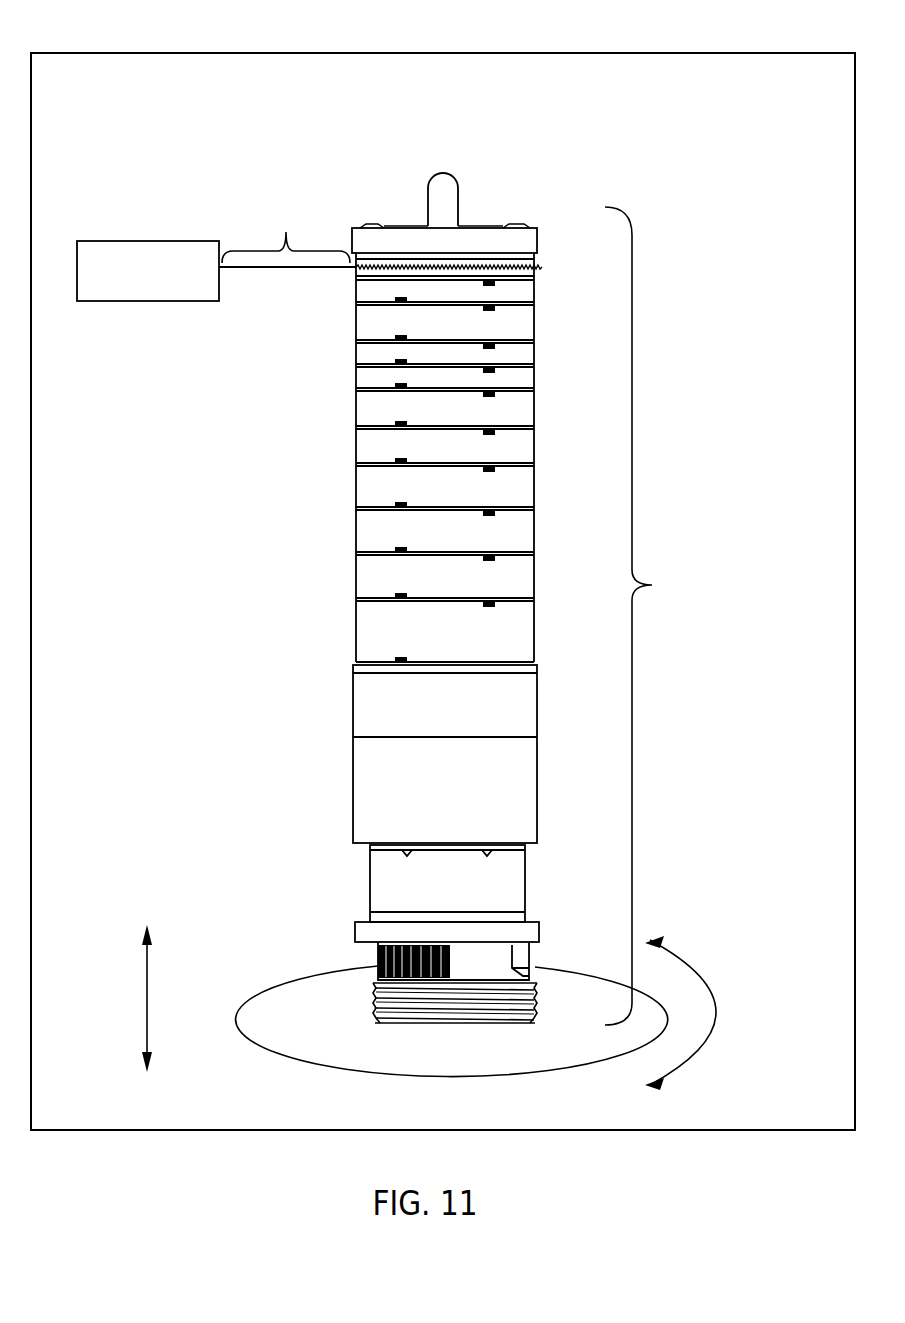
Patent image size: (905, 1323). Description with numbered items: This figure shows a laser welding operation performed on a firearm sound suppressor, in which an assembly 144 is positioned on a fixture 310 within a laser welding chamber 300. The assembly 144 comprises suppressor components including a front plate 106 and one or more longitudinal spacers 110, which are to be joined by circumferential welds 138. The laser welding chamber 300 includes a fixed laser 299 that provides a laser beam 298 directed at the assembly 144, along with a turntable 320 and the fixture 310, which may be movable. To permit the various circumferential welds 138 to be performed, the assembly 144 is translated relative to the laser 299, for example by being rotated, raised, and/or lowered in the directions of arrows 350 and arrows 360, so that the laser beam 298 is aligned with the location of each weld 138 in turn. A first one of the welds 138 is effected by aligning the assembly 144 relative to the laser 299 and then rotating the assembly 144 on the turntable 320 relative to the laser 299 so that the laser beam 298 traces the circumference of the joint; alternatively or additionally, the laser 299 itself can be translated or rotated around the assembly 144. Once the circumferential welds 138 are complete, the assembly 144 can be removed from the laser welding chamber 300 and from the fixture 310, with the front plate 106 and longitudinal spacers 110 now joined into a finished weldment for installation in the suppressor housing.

The laser welding chamber 300 is at (661, 53).
The fixture 310 is at (460, 184).
The front plate 106 is at (535, 258).
The circumferential welds 138 is at (537, 267).
The longitudinal spacers 110 is at (535, 279).
The assembly 144 is at (650, 616).
The laser 299 is at (204, 241).
The laser beam 298 is at (286, 230).
The turntable 320 is at (470, 1067).
The arrows 350 is at (717, 1006).
The arrows 360 is at (147, 997).